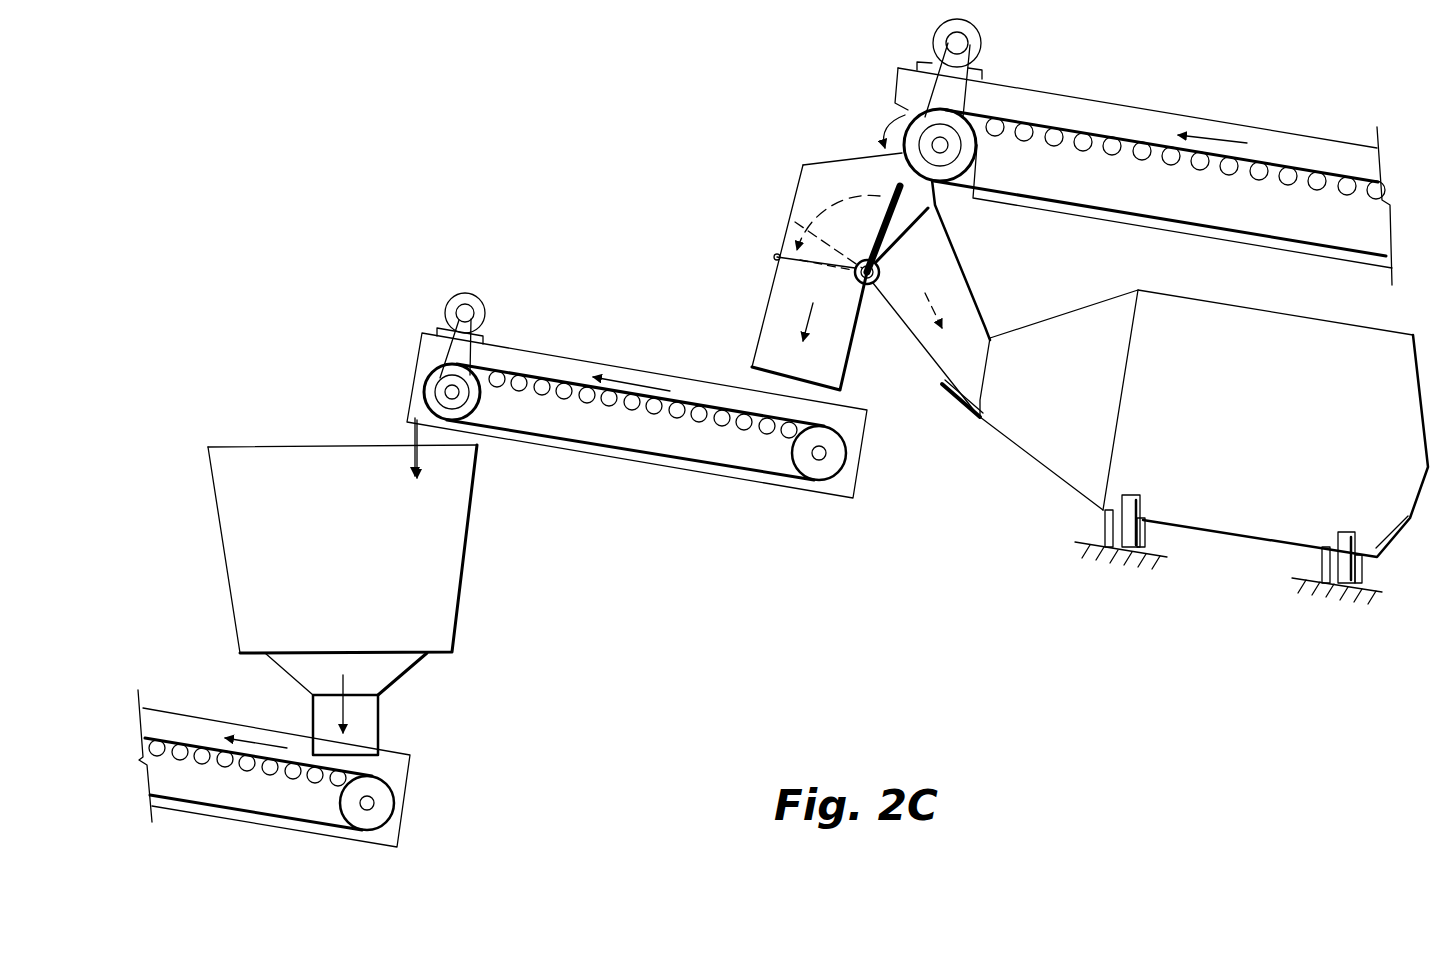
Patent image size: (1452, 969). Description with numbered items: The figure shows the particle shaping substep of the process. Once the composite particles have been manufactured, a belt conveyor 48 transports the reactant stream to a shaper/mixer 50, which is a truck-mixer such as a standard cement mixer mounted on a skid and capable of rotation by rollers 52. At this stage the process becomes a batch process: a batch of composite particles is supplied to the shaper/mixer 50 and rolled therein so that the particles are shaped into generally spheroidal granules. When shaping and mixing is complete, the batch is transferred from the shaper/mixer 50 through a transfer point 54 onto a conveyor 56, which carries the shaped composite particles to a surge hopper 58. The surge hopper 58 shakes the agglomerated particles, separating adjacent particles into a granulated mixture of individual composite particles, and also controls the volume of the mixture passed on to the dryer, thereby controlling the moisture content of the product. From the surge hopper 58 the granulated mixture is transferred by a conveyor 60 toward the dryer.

The belt conveyor 48 is at (1273, 163).
The shaper/mixer 50 is at (1268, 515).
The rollers 52 is at (1122, 535).
The transfer point 54 is at (793, 202).
The conveyor 56 is at (532, 375).
The surge hopper 58 is at (213, 490).
The conveyor 60 is at (168, 737).